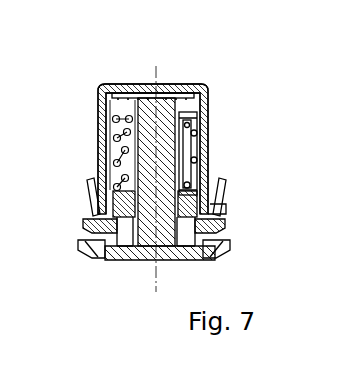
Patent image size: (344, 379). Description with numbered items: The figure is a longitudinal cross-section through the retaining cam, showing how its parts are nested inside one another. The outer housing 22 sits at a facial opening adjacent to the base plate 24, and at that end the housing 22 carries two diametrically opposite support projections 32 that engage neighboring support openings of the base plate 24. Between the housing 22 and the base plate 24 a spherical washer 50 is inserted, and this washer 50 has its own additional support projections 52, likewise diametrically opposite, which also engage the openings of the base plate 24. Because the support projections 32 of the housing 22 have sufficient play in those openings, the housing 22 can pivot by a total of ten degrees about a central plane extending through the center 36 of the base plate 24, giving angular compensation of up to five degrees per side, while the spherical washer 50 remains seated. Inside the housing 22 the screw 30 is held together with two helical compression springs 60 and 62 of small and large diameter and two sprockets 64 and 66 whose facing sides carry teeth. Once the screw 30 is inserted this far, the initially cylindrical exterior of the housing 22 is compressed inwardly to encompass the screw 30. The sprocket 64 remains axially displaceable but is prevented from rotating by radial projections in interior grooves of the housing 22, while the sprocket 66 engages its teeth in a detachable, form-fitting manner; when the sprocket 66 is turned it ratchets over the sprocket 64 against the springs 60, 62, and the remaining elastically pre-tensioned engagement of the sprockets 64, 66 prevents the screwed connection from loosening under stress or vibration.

The housing 22 is at (103, 143).
The base plate 24 is at (213, 262).
The screw 30 is at (113, 152).
The support projections 32 is at (224, 228).
The center 36 is at (172, 86).
The spherical washer 50 is at (115, 261).
The support projections 52 is at (228, 250).
The helical compression spring 60 is at (188, 124).
The helical compression spring 62 is at (198, 150).
The sprocket 64 is at (223, 179).
The sprocket 66 is at (226, 203).